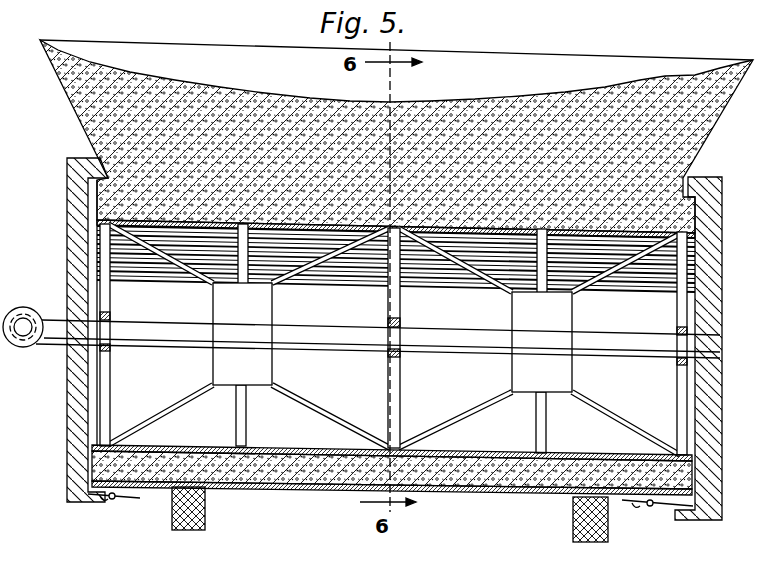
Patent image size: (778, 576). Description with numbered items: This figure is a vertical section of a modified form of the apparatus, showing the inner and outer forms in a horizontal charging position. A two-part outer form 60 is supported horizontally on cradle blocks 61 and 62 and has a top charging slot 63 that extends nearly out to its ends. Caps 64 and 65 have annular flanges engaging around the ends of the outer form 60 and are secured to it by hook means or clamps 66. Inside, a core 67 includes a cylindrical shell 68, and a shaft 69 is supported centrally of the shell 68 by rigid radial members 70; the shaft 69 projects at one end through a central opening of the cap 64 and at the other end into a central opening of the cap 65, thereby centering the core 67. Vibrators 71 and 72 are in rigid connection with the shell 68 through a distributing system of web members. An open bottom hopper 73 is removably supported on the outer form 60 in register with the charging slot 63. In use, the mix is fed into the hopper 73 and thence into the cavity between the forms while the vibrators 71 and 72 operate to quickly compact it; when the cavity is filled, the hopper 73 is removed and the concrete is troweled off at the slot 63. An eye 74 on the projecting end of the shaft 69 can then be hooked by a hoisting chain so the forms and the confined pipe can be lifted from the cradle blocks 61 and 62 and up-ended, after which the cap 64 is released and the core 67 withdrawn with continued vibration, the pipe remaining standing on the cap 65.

The two-part outer form 60 is at (536, 489).
The cradle block 61 is at (183, 531).
The cradle block 62 is at (592, 543).
The top charging slot 63 is at (697, 162).
The cap 64 is at (76, 493).
The cap 65 is at (701, 521).
The hook means or clamps 66 is at (128, 499).
The core 67 is at (484, 461).
The cylindrical shell 68 is at (306, 448).
The shaft 69 is at (608, 340).
The rigid radial members 70 is at (110, 298).
The vibrator 71 is at (265, 304).
The vibrator 72 is at (520, 312).
The open bottom hopper 73 is at (710, 133).
The eye 74 is at (30, 307).